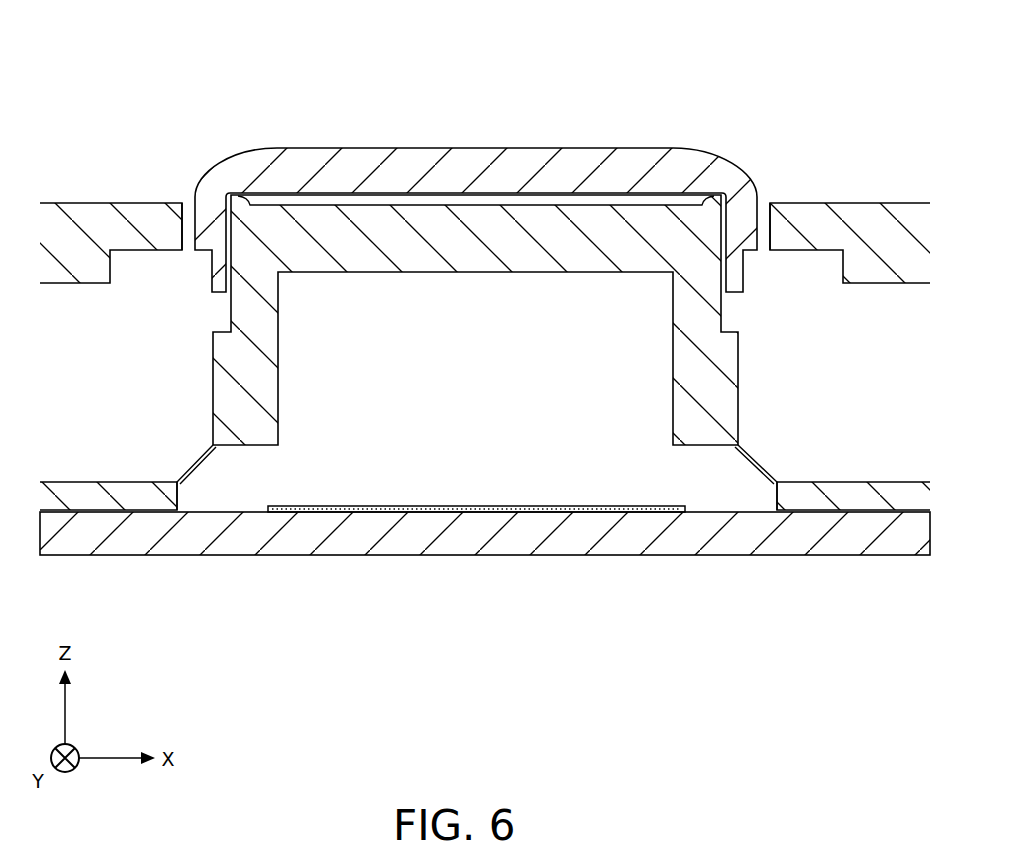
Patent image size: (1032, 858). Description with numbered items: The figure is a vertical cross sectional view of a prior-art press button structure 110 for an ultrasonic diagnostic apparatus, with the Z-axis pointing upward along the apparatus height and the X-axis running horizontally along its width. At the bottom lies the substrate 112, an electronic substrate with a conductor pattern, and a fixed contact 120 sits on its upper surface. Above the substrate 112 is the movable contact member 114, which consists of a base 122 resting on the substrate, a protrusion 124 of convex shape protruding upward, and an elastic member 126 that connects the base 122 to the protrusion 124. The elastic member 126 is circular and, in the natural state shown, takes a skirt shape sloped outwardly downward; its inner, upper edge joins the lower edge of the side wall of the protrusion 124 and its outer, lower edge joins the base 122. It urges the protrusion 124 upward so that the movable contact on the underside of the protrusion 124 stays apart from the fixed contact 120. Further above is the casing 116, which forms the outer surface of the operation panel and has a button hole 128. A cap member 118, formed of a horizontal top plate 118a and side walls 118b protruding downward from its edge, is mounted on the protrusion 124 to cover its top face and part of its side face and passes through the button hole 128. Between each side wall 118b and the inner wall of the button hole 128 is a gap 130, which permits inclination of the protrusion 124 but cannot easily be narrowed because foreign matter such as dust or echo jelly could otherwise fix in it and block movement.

The press button structure 110 is at (452, 70).
The substrate 112 is at (75, 556).
The movable contact member 114 is at (175, 352).
The casing 116 is at (66, 203).
The cap member 118 is at (513, 127).
The top plate 118a is at (573, 148).
The side wall 118b is at (215, 197).
The fixed contact 120 is at (472, 510).
The base 122 is at (72, 482).
The protrusion 124 is at (498, 245).
The elastic member 126 is at (197, 457).
The button hole 128 is at (182, 227).
The gap 130 is at (187, 176).